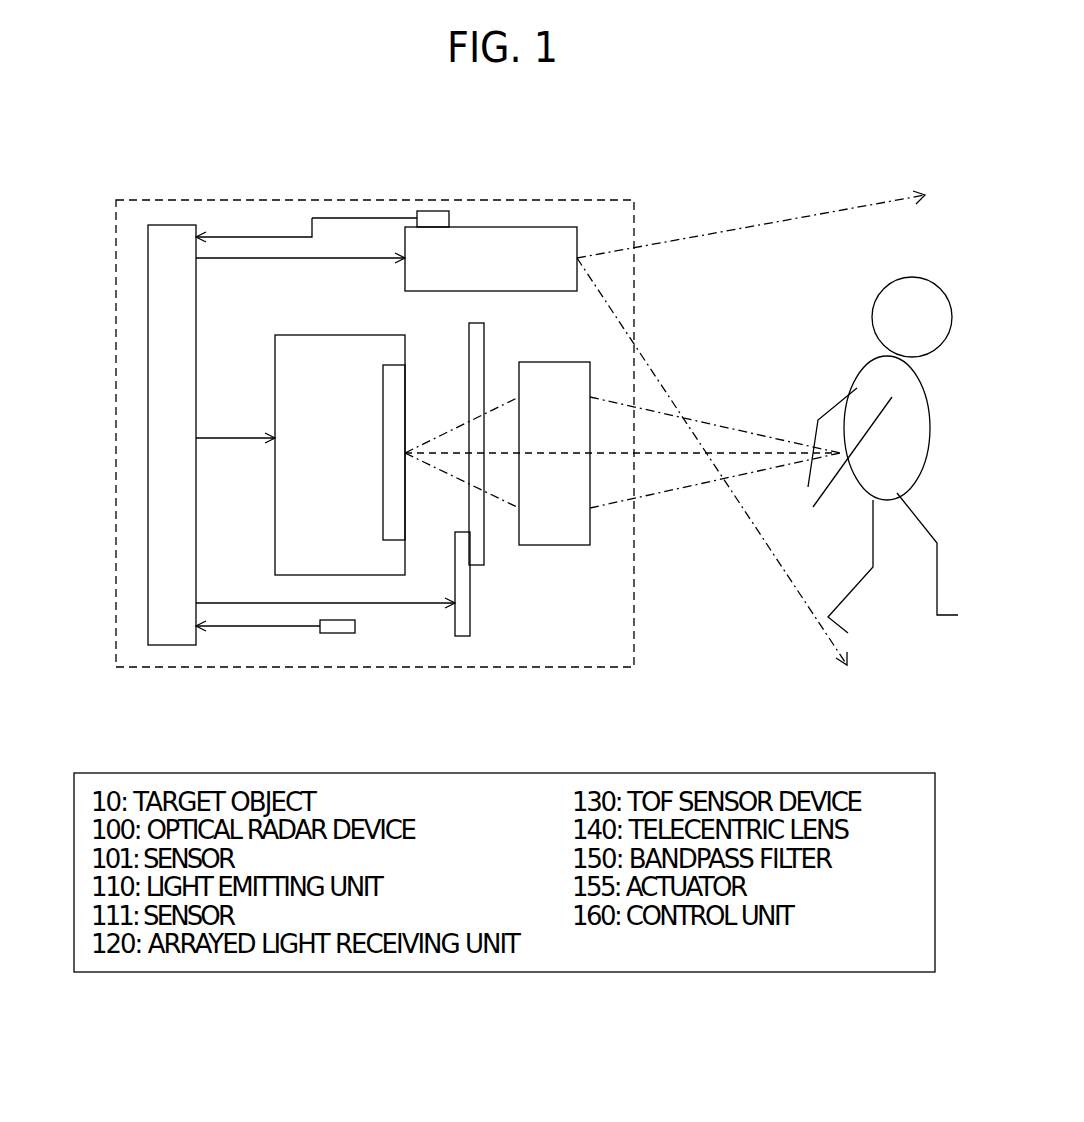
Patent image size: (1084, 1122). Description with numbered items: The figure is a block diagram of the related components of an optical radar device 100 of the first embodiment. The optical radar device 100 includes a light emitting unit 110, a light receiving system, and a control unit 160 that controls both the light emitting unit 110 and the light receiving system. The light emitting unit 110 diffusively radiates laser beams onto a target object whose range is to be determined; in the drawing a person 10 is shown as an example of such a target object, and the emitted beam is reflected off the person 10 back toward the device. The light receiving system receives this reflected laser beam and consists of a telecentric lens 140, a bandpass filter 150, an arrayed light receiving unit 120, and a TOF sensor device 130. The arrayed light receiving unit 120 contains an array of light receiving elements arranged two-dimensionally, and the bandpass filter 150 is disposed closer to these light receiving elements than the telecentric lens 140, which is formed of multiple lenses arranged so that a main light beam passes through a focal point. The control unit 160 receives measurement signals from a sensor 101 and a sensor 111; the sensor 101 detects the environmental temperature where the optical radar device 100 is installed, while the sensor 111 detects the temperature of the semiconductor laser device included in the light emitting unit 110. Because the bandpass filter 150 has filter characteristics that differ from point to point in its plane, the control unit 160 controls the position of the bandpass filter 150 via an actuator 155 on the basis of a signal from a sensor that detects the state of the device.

The person 10 is at (913, 277).
The optical radar device 100 is at (618, 200).
The sensor 101 is at (343, 633).
The light emitting unit 110 is at (526, 227).
The sensor 111 is at (434, 211).
The arrayed light receiving unit 120 is at (383, 390).
The TOF sensor device 130 is at (275, 362).
The telecentric lens 140 is at (555, 545).
The bandpass filter 150 is at (476, 565).
The actuator 155 is at (462, 636).
The control unit 160 is at (148, 413).